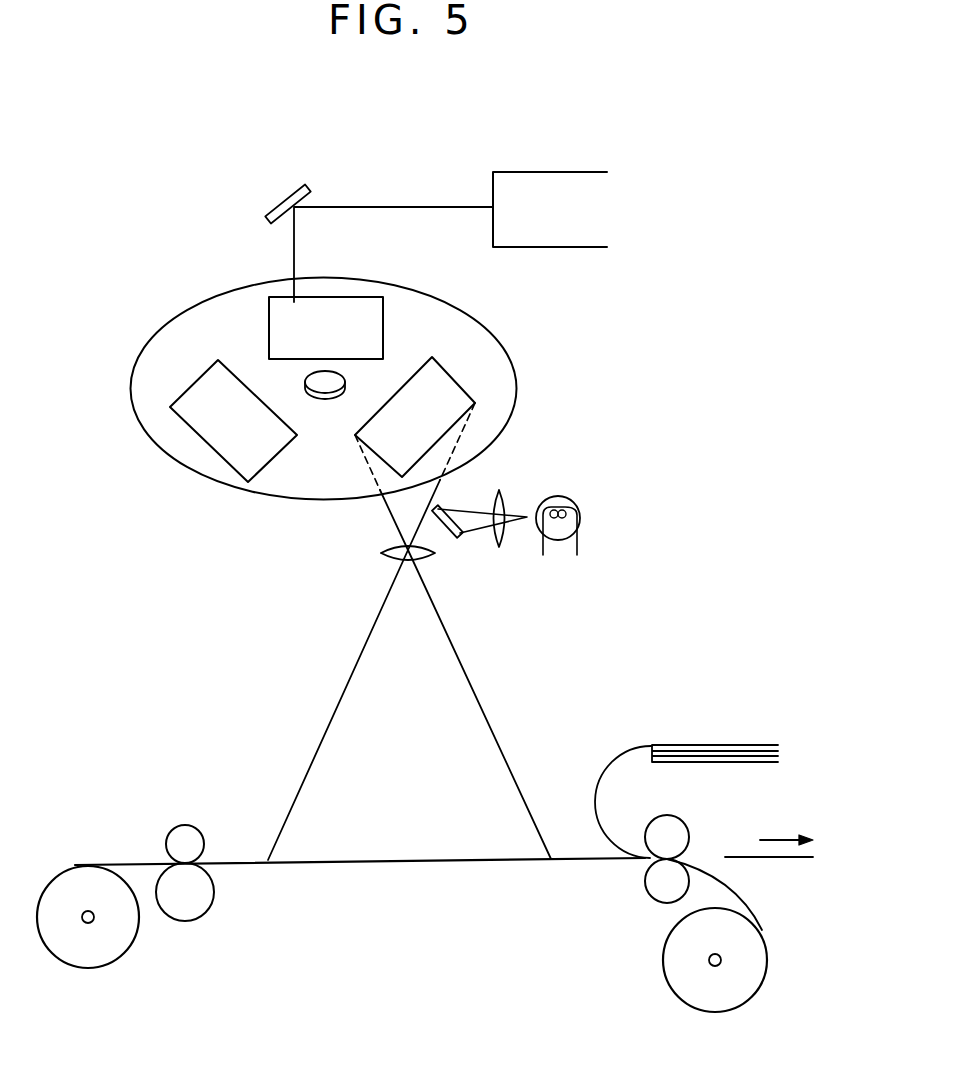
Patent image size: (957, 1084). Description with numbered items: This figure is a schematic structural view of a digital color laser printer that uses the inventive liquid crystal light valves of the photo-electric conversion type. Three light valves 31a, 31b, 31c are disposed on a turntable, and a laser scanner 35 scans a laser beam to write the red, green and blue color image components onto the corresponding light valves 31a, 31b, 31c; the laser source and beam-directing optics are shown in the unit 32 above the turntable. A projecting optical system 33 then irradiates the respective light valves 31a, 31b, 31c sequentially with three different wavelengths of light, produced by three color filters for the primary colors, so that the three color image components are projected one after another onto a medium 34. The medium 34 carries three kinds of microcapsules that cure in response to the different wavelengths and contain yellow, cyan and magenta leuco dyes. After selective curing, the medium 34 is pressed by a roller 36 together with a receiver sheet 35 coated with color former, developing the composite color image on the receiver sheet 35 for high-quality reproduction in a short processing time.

The laser light source unit 32 is at (607, 163).
The light valve 31a is at (197, 397).
The light valve 31b is at (450, 387).
The light valve 31c is at (373, 328).
The projecting optical system 33 is at (603, 479).
The medium 34 is at (482, 858).
The receiver sheet 35 is at (712, 744).
The roller 36 is at (687, 826).